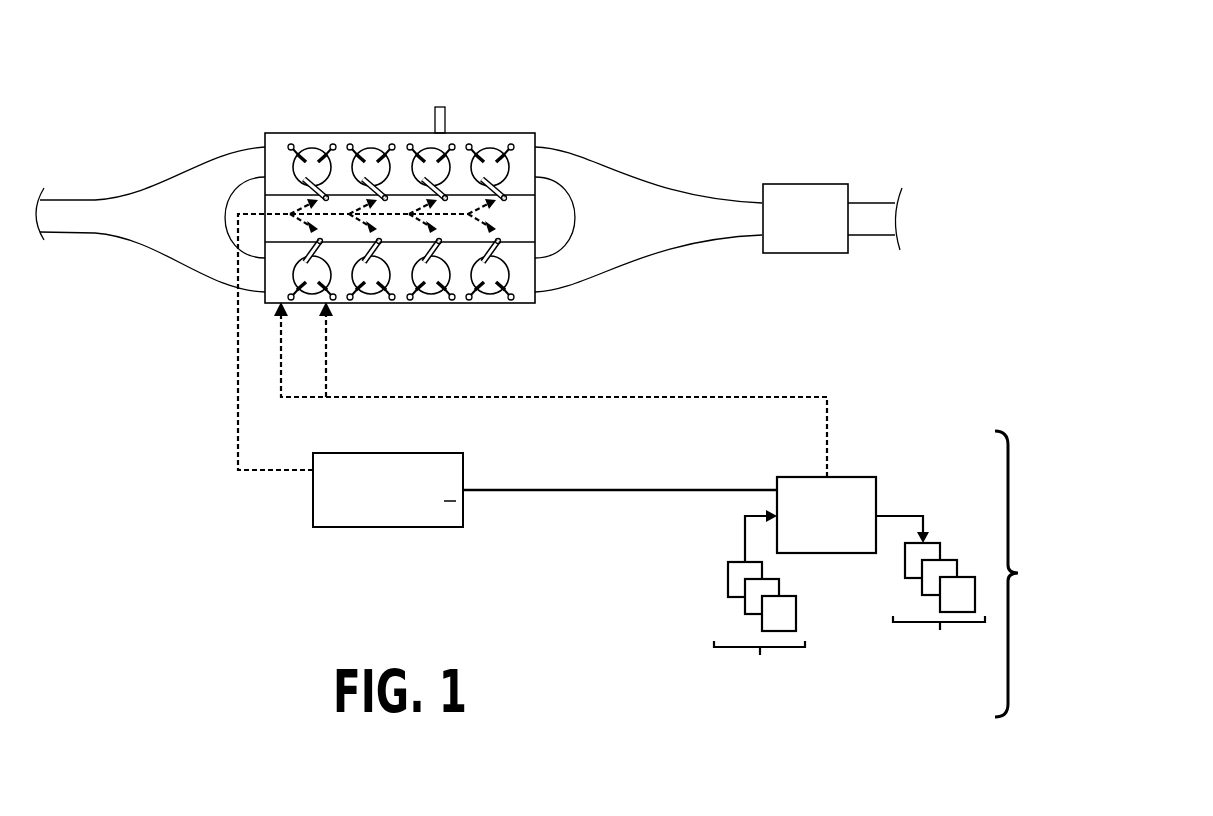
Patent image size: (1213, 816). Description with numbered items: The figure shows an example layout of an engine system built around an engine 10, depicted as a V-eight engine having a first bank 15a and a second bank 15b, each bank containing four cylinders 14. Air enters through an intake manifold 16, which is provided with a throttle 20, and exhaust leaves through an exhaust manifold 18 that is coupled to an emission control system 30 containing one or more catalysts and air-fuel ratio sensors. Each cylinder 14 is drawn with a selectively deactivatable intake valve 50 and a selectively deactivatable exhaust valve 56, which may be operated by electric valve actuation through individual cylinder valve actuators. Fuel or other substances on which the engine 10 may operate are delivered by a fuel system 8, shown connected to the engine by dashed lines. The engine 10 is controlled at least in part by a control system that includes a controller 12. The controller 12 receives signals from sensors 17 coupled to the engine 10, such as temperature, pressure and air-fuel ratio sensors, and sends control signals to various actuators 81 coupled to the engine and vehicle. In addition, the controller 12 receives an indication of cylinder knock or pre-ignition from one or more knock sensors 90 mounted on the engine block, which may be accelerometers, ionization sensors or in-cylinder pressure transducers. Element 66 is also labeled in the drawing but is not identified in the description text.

The fuel system 8 is at (507, 363).
The engine 10 is at (534, 104).
The controller 12 is at (575, 427).
The cylinders 14 is at (503, 165).
The first bank 15a is at (318, 133).
The second bank 15b is at (335, 305).
The intake manifold 16 is at (142, 191).
The sensors 17 is at (759, 605).
The exhaust manifold 18 is at (600, 187).
The throttle 20 is at (117, 209).
The emission control system 30 is at (803, 183).
The intake valves 50 is at (468, 292).
The exhaust valves 56 is at (500, 292).
The fuel injector 66 is at (308, 180).
The actuators 81 is at (932, 598).
The knock sensors 90 is at (447, 121).